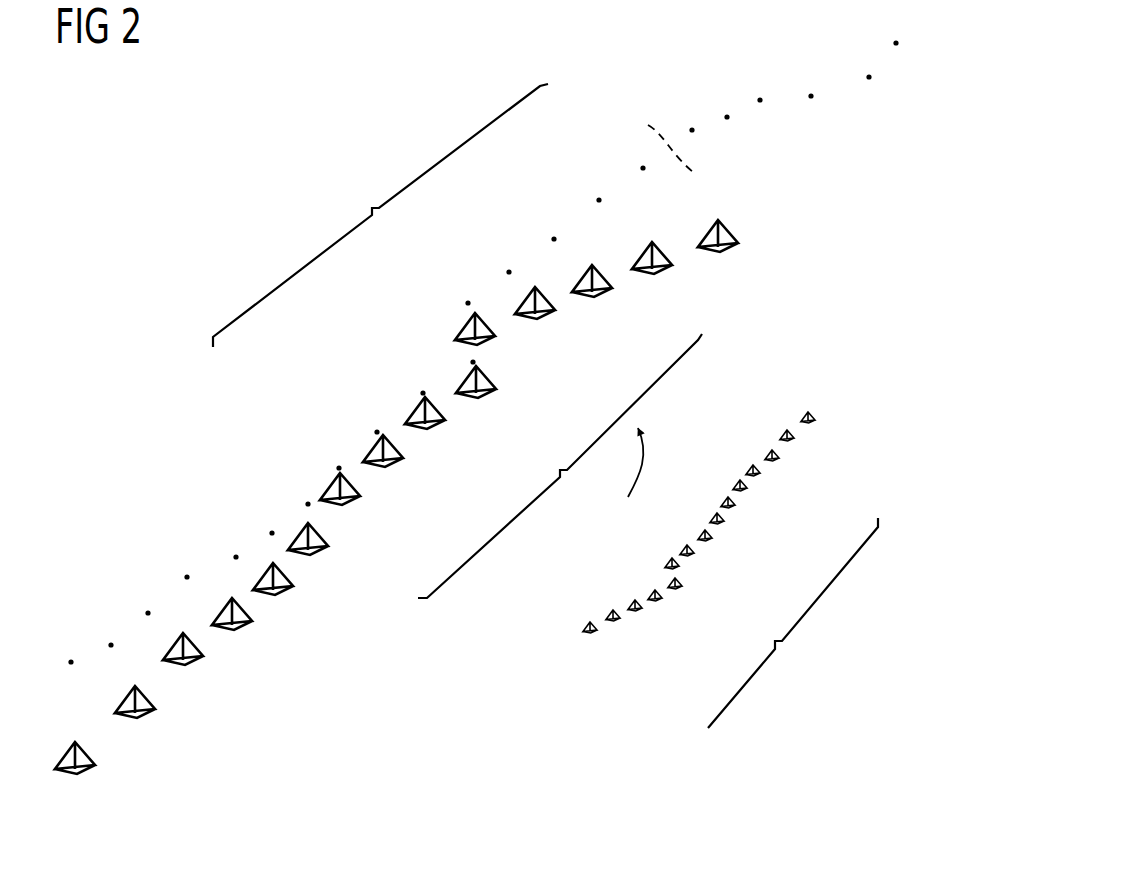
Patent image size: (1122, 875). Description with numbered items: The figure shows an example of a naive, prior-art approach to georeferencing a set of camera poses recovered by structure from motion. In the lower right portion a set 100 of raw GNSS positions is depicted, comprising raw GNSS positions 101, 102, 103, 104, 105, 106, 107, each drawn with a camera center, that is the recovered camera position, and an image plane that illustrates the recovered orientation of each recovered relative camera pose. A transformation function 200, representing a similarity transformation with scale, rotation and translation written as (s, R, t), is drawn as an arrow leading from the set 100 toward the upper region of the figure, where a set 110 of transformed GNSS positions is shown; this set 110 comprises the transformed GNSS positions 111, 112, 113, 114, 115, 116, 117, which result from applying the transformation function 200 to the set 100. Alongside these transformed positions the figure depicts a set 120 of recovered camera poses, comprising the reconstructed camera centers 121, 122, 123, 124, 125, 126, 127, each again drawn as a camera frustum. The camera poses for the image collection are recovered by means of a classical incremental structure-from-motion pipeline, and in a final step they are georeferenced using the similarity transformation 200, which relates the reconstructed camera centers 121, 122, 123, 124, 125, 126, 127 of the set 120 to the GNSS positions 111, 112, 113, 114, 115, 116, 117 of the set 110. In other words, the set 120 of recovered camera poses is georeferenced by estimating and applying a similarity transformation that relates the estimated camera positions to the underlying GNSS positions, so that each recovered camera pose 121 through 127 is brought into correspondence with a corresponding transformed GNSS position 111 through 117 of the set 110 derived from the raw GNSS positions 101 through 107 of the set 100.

The set of raw GNSS positions 100 is at (793, 623).
The raw GNSS position 101 is at (723, 537).
The raw GNSS position 102 is at (700, 552).
The raw GNSS position 103 is at (687, 567).
The raw GNSS position 104 is at (682, 595).
The raw GNSS position 105 is at (660, 610).
The raw GNSS position 106 is at (640, 617).
The raw GNSS position 107 is at (613, 628).
The set of transformed GNSS positions 110 is at (380, 215).
The transformed GNSS position 111 is at (368, 430).
The transformed GNSS position 112 is at (413, 395).
The transformed GNSS position 113 is at (458, 356).
The transformed GNSS position 114 is at (467, 297).
The transformed GNSS position 115 is at (508, 265).
The transformed GNSS position 116 is at (553, 233).
The transformed GNSS position 117 is at (598, 192).
The set of recovered camera poses 120 is at (560, 466).
The recovered camera pose 121 is at (397, 472).
The recovered camera pose 122 is at (437, 436).
The recovered camera pose 123 is at (485, 402).
The recovered camera pose 124 is at (500, 352).
The recovered camera pose 125 is at (548, 327).
The recovered camera pose 126 is at (600, 307).
The recovered camera pose 127 is at (662, 277).
The transformation function 200 is at (647, 470).